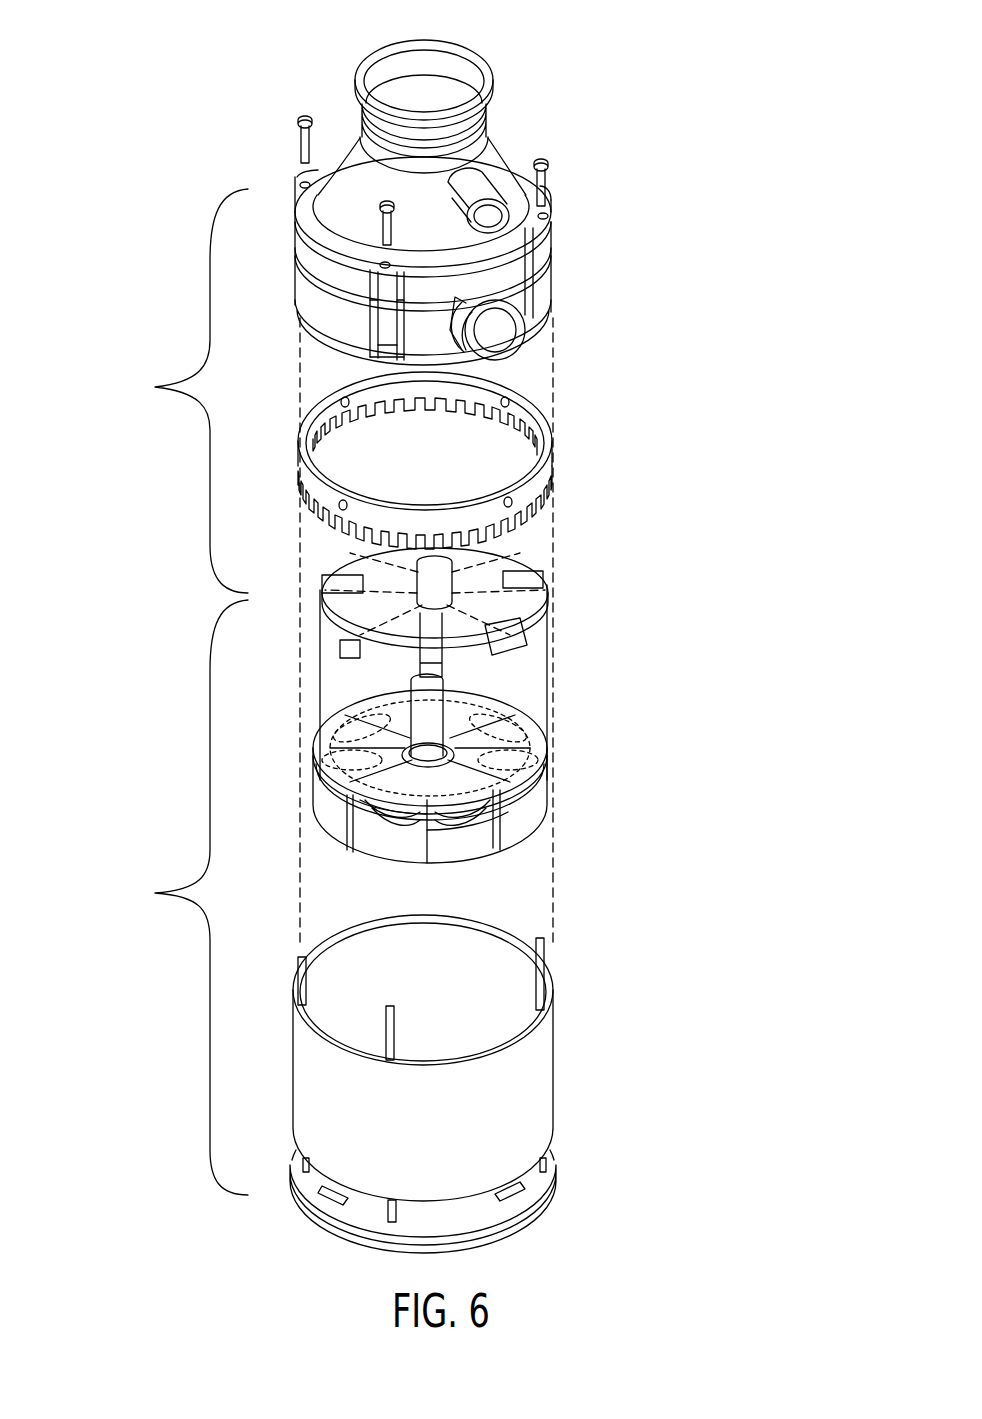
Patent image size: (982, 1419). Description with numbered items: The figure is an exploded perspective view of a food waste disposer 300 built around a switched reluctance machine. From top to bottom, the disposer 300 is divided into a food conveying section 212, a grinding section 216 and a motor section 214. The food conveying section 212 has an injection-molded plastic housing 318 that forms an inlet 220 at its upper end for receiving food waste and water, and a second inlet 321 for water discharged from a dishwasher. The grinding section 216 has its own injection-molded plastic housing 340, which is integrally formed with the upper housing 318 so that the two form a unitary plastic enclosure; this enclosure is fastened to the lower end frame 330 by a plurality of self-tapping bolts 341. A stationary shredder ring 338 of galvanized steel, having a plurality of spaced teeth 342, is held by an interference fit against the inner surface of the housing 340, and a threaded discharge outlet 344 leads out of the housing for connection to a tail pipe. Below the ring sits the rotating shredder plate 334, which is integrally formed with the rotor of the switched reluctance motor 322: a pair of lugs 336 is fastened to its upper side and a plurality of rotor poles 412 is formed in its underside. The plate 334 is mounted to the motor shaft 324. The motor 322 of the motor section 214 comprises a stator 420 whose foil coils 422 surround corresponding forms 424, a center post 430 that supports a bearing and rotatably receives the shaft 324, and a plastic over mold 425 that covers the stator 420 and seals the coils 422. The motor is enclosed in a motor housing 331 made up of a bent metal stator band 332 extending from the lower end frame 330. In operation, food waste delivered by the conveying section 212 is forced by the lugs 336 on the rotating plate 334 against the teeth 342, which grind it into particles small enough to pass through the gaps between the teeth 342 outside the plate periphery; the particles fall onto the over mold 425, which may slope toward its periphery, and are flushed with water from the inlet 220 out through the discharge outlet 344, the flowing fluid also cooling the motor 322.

The food waste disposer 300 is at (200, 88).
The food conveying section 212 is at (330, 108).
The inlet 220 is at (388, 55).
The housing 318 is at (550, 224).
The inlet 321 is at (505, 200).
The bolts 341 is at (300, 155).
The housing 340 is at (550, 277).
The discharge outlet 344 is at (522, 335).
The shredder ring 338 is at (552, 430).
The teeth 342 is at (545, 498).
The lugs 336 is at (500, 567).
The shredder plate 334 is at (545, 605).
The rotor poles 412 is at (528, 648).
The switched reluctance motor 322 is at (612, 686).
The motor shaft 324 is at (425, 717).
The forms 424 is at (312, 727).
The center post 430 is at (455, 752).
The stator 420 is at (557, 763).
The plastic over mold 425 is at (525, 813).
The foil coils 422 is at (470, 843).
The stator band 332 is at (550, 1020).
The motor housing 331 is at (605, 1090).
The lower end frame 330 is at (553, 1186).
The grinding section 216 is at (158, 387).
The motor section 214 is at (158, 893).